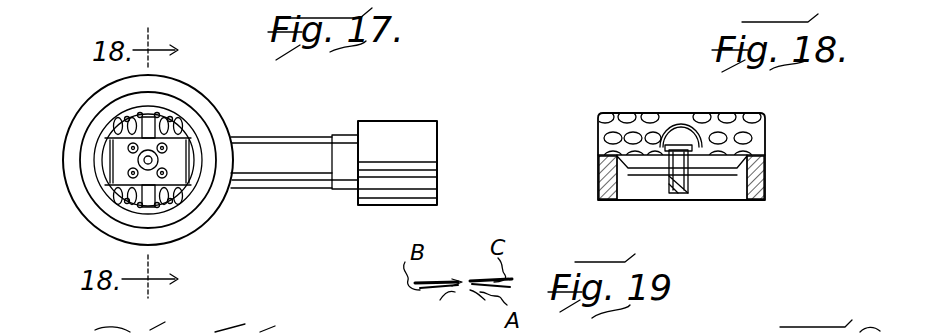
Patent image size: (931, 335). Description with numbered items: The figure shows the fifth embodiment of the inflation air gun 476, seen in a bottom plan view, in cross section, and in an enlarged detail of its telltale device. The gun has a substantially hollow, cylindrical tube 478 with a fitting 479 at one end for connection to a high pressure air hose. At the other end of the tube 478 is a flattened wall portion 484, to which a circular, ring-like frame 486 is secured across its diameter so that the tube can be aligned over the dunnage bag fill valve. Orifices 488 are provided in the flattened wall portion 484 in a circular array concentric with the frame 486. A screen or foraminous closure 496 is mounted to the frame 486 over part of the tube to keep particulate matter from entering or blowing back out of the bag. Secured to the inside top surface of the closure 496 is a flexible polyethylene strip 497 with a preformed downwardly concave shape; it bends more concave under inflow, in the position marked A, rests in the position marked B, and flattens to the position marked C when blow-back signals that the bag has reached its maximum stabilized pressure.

In FIG. 17, the air gun 476 is at (300, 96).
In FIG. 17, the tube 478 is at (315, 178).
In FIG. 17, the fitting 479 is at (416, 136).
In FIG. 17, the flattened wall portion 484 is at (183, 142).
In FIG. 18, the flattened wall portion 484 is at (690, 152).
In FIG. 17, the ring-like frame 486 is at (200, 212).
In FIG. 18, the ring-like frame 486 is at (760, 200).
In FIG. 17, the orifices 488 is at (130, 172).
In FIG. 18, the foraminous closure 496 is at (763, 114).
In FIG. 17, the strip of flexible material 497 is at (140, 200).
In FIG. 18, the strip of flexible material 497 is at (727, 132).